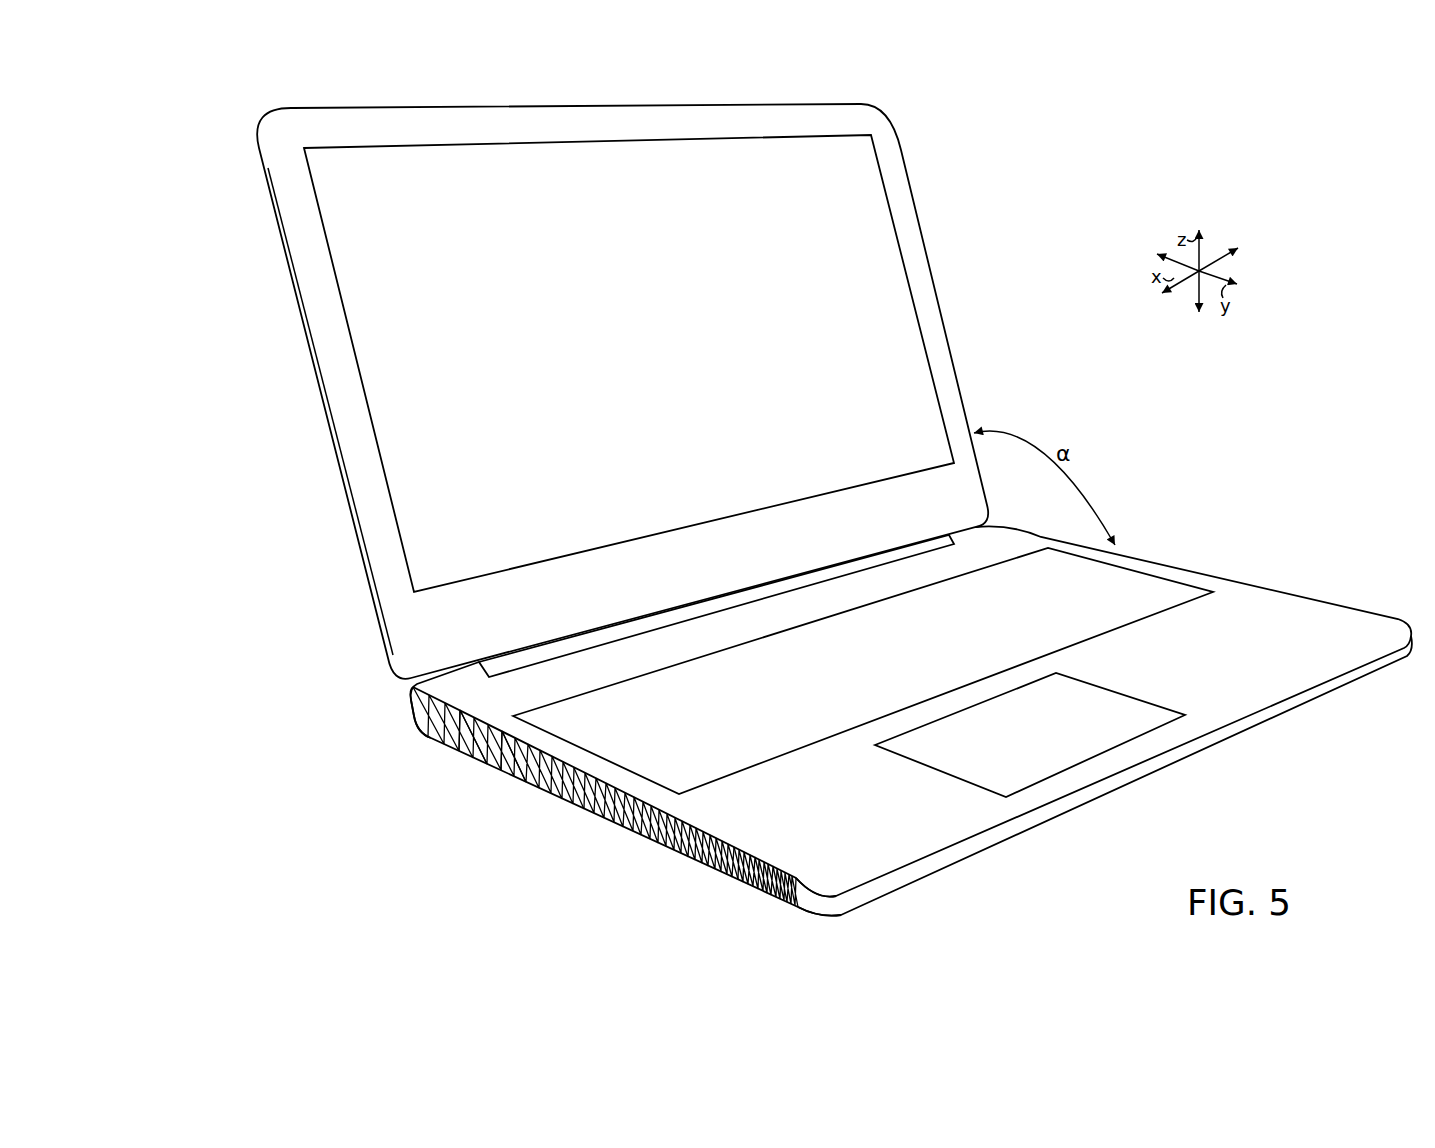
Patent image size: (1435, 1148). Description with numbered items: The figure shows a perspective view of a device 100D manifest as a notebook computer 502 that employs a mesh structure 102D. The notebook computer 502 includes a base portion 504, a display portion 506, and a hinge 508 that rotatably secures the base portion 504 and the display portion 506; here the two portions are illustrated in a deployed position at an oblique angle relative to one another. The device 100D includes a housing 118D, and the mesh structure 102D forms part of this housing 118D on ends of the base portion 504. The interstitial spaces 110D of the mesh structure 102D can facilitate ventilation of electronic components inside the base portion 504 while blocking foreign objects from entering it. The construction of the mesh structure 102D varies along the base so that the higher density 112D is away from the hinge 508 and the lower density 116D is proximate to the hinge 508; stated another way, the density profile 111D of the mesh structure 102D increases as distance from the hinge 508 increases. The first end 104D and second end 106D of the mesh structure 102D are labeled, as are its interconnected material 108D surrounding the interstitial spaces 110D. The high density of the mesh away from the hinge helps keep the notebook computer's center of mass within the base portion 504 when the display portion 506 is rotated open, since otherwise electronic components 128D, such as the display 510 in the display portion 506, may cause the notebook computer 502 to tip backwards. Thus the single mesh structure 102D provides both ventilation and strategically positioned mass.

The device 100D is at (781, 506).
The notebook computer 502 is at (786, 522).
The display portion 506 is at (574, 391).
The display 510 is at (636, 323).
The electronic components 128D is at (356, 381).
The hinge 508 is at (840, 563).
The base portion 504 is at (786, 733).
The housing 118D is at (786, 733).
The mesh structure 102D is at (591, 812).
The first end 104D is at (785, 908).
The second end 106D is at (398, 710).
The interconnected material 108D is at (518, 774).
The interstitial spaces 110D is at (470, 742).
The density profile 111D is at (673, 857).
The higher density 112D is at (768, 906).
The lower density 116D is at (405, 722).